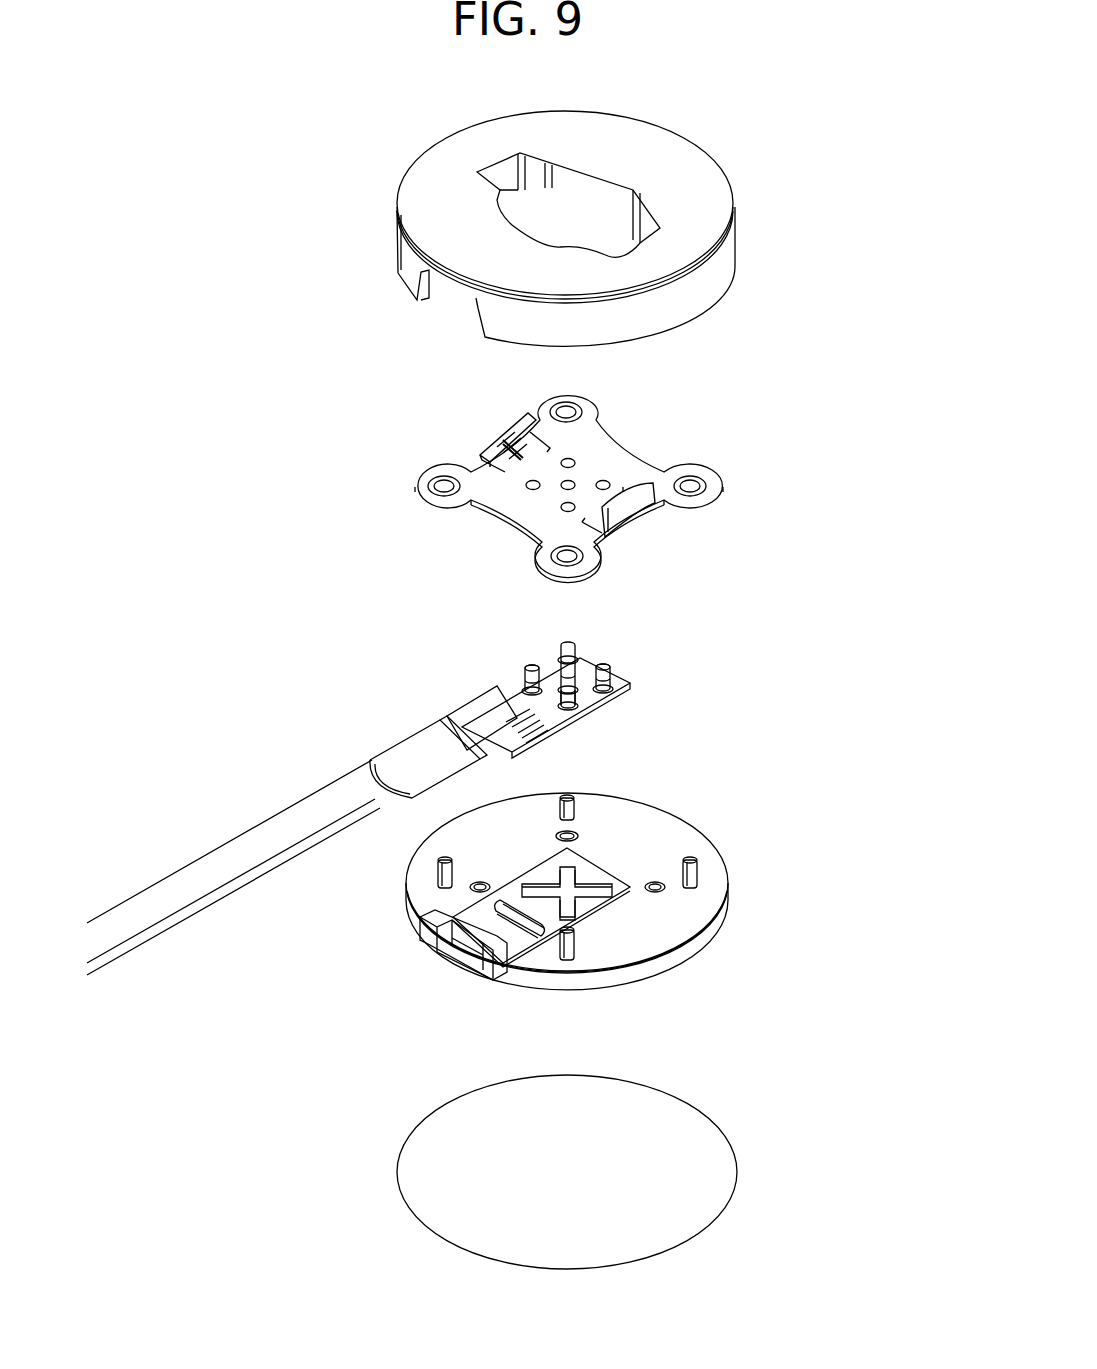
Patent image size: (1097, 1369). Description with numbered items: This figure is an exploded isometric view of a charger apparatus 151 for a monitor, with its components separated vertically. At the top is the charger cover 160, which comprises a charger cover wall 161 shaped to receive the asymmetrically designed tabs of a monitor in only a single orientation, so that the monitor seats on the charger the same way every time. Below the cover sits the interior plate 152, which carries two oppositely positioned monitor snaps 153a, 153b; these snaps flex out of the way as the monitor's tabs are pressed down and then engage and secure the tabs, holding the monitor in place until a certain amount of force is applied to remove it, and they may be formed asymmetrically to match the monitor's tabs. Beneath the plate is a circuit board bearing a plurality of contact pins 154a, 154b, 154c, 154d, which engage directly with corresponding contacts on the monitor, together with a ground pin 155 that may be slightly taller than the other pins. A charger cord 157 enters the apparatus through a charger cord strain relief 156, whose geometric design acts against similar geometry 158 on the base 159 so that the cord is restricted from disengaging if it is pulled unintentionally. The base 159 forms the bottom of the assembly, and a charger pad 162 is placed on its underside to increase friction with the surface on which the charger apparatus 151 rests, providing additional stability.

The charger apparatus 151 is at (203, 422).
The interior plate 152 is at (722, 487).
The monitor snap 153a is at (507, 420).
The monitor snap 153b is at (640, 485).
The contact pin 154a is at (603, 668).
The contact pin 154b is at (570, 695).
The contact pin 154c is at (537, 670).
The contact pin 154d is at (573, 665).
The ground pin 155 is at (568, 672).
The charger cord strain relief 156 is at (457, 707).
The charger cord 157 is at (158, 888).
The similar geometry 158 is at (468, 938).
The base 159 is at (730, 887).
The charger cover 160 is at (713, 158).
The charger cover wall 161 is at (503, 170).
The charger pad 162 is at (423, 1122).